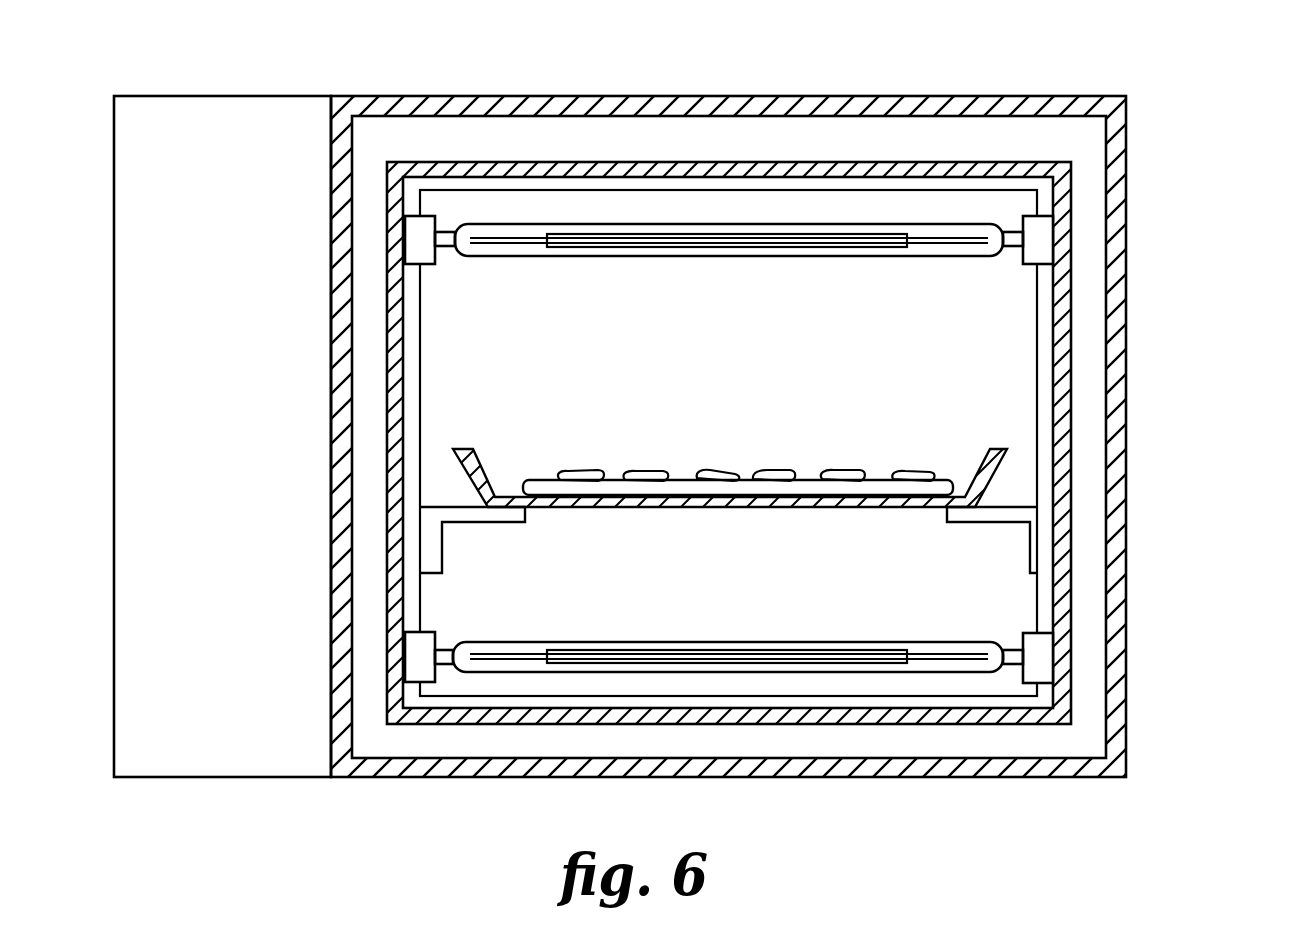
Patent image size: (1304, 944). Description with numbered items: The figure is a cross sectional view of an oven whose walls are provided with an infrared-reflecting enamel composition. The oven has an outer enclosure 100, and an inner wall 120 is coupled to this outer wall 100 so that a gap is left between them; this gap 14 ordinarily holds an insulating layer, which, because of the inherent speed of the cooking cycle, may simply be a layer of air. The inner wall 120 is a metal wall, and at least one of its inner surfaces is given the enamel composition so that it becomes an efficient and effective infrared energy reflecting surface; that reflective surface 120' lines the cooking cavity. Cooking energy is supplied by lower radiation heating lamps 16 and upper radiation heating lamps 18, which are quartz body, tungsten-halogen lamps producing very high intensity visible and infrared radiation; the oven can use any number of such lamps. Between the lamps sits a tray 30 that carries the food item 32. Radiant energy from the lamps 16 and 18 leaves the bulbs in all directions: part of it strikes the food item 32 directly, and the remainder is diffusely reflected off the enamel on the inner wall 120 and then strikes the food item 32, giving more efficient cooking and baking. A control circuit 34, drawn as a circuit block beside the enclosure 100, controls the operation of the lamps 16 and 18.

The outer enclosure 100 is at (1128, 177).
The insulated housing space 14 is at (1092, 368).
The control circuit 34 is at (266, 627).
The inner wall 120 is at (810, 443).
The reflective liner 120' is at (759, 455).
The upper radiation heating lamps 18 is at (948, 224).
The lower radiation heating lamps 16 is at (520, 673).
The tray 30 is at (538, 449).
The food item 32 is at (688, 476).